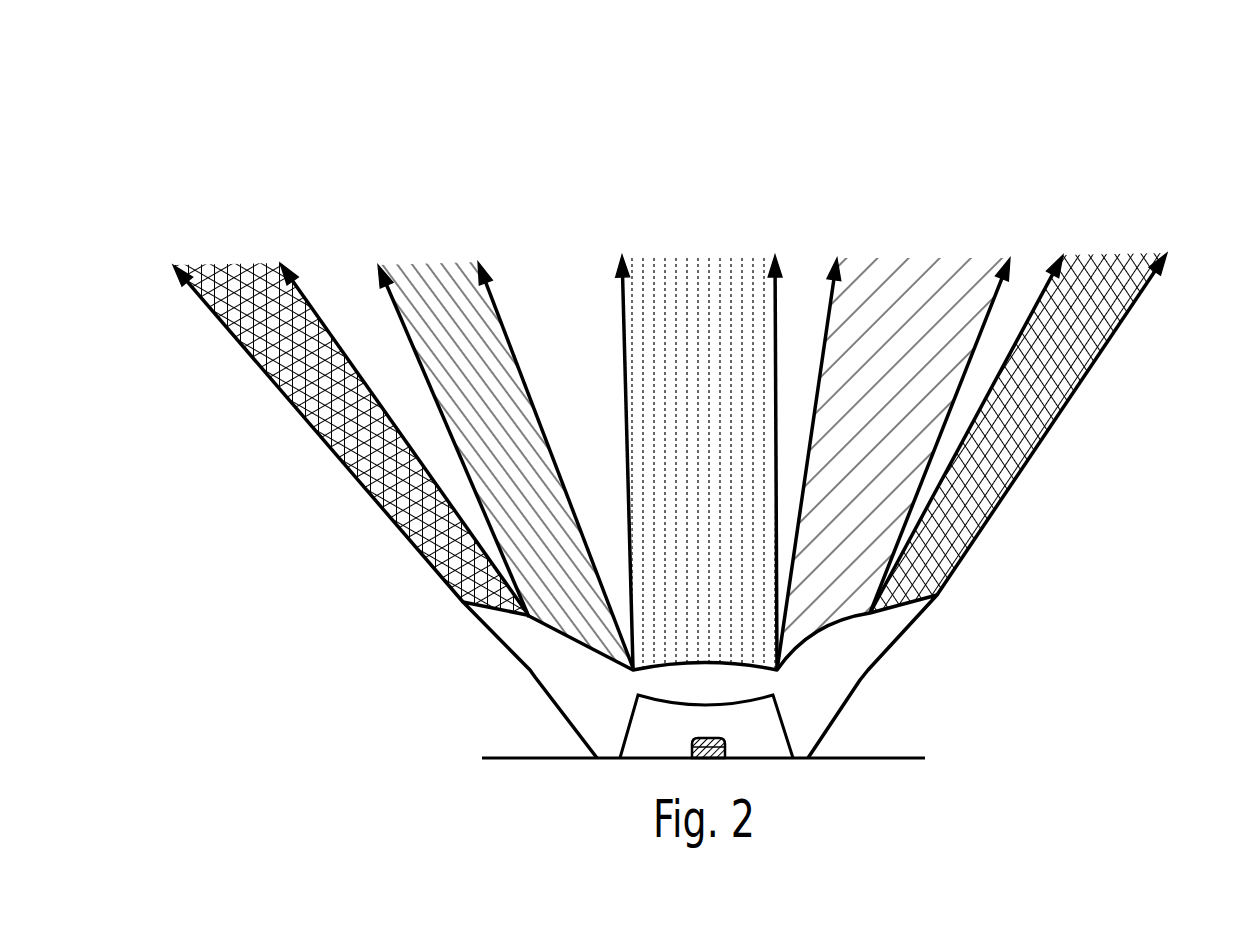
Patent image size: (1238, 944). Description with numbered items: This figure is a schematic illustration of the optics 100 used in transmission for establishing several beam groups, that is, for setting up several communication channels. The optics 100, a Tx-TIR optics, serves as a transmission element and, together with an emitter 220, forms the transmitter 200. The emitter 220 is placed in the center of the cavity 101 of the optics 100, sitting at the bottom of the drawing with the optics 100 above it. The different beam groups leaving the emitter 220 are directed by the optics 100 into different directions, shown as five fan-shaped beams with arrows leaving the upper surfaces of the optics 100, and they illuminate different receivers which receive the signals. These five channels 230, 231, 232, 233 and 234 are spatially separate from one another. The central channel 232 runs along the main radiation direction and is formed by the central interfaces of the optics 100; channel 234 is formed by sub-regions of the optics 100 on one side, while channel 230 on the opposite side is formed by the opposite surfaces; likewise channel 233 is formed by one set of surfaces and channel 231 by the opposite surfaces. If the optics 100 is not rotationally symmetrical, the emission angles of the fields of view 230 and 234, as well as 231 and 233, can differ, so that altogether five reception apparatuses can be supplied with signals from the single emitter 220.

The transmitter 200 is at (199, 122).
The optics 100 is at (863, 642).
The cavity 101 is at (750, 708).
The emitter 220 is at (727, 748).
The channel 230 is at (232, 305).
The channel 231 is at (432, 305).
The central channel 232 is at (698, 305).
The channel 233 is at (915, 305).
The channel 234 is at (1105, 305).